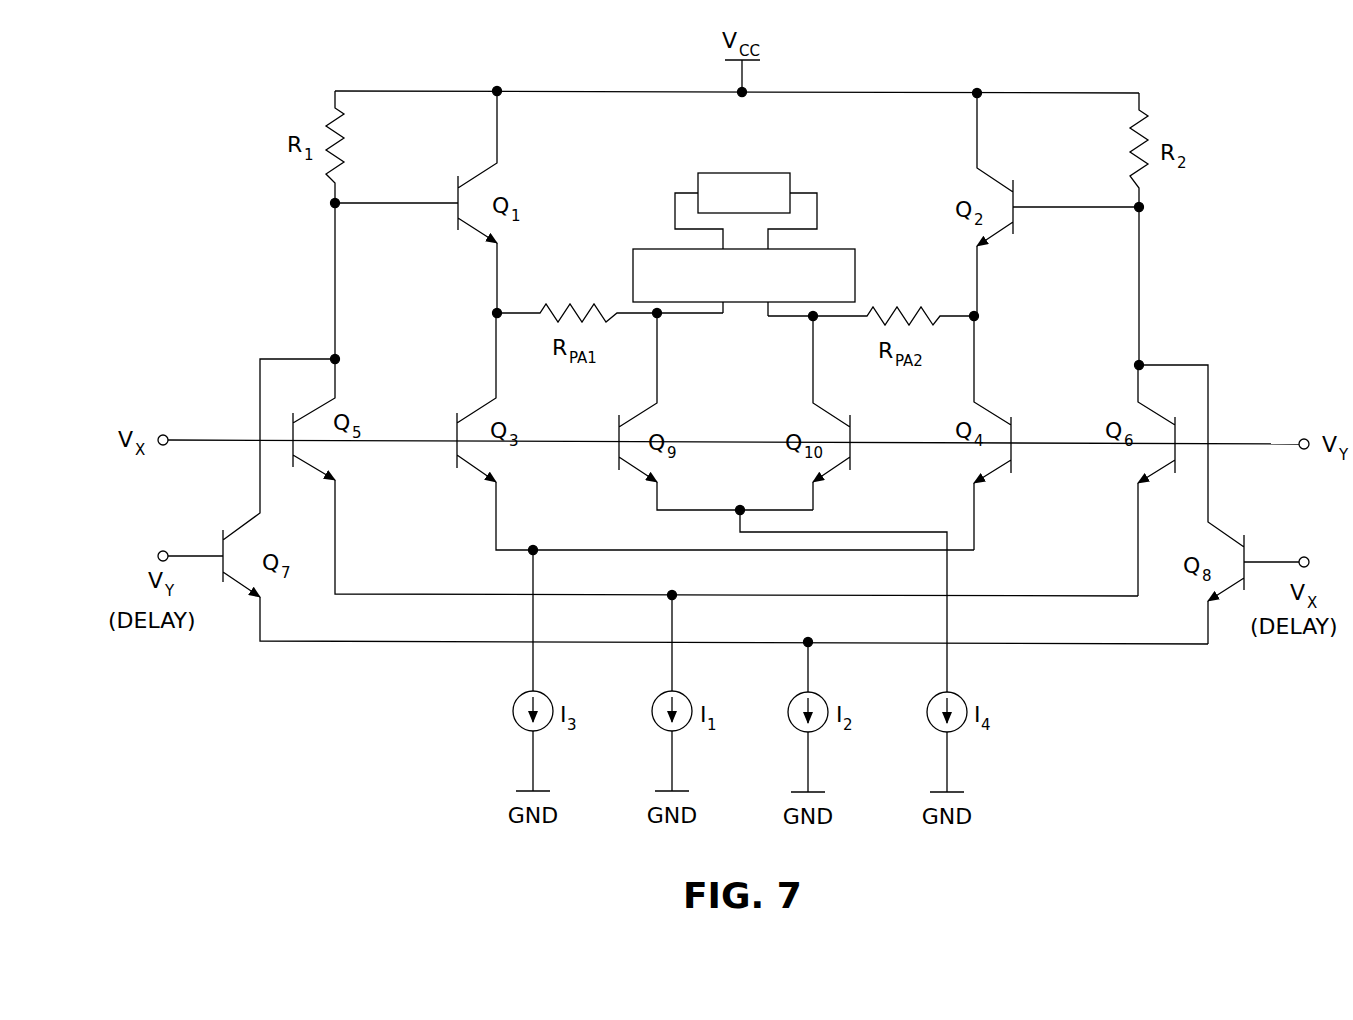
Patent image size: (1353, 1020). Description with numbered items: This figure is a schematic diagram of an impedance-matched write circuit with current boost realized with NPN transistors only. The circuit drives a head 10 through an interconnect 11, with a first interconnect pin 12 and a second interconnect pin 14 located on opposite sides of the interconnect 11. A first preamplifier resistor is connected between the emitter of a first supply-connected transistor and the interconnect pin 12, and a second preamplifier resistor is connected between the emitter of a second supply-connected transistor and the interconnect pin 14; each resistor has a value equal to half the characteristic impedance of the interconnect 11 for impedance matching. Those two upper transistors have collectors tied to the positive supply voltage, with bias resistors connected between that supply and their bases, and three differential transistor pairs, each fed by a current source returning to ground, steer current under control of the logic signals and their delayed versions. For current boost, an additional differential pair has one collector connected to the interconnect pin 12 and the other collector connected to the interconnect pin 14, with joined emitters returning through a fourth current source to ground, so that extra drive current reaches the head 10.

The head 10 is at (745, 172).
The interconnect 11 is at (653, 248).
The interconnect pin 12 is at (660, 318).
The interconnect pin 14 is at (810, 321).